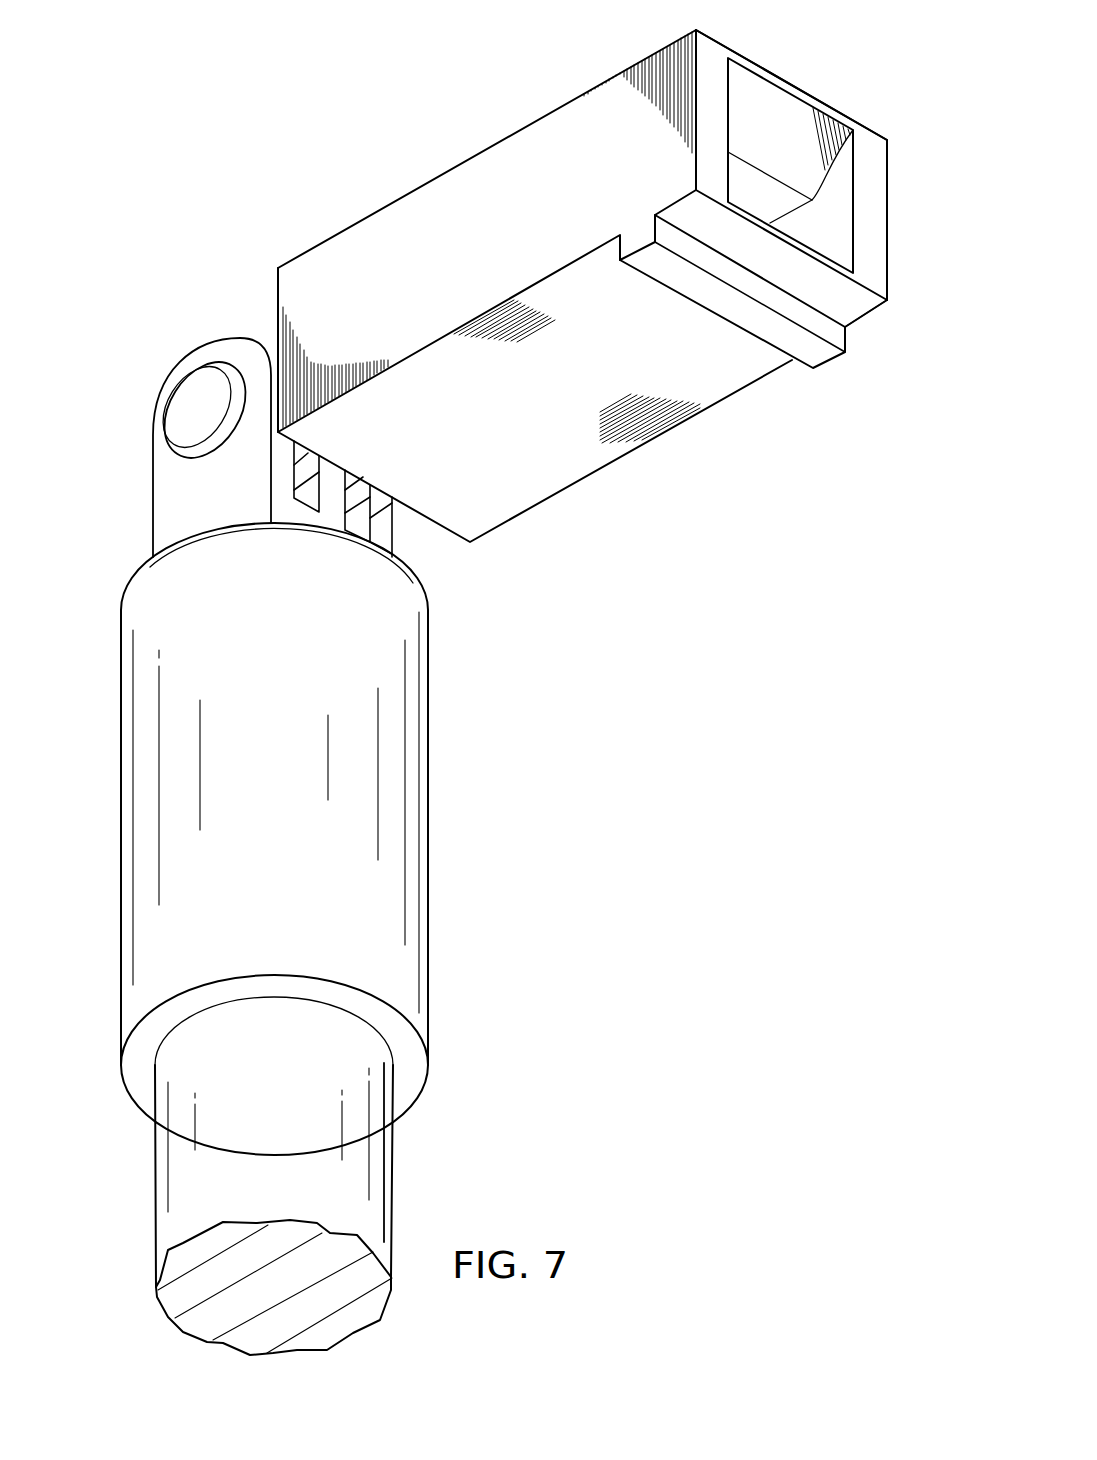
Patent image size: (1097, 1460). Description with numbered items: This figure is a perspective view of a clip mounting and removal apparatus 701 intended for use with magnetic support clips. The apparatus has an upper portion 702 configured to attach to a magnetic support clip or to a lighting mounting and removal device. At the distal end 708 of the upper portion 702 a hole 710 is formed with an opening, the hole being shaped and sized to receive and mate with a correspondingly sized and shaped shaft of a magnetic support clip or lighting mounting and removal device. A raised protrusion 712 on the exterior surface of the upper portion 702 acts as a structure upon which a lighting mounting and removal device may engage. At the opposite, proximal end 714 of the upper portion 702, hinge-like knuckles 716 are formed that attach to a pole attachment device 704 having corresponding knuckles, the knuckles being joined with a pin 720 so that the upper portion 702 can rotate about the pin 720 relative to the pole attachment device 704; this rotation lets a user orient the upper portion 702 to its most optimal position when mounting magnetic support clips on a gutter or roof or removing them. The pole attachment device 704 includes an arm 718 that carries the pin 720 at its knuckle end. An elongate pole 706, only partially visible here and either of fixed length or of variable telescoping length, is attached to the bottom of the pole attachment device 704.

The mounting assembly 701 is at (663, 958).
The upper portion 702 is at (577, 483).
The pole attachment device 704 is at (121, 806).
The elongate pole 706 is at (156, 1190).
The distal end 708 is at (878, 172).
The hole 710 is at (778, 106).
The raised protrusion 712 is at (814, 369).
The proximal end 714 is at (280, 290).
The hinge-like knuckles 716 is at (312, 465).
The mounting arm 718 is at (170, 497).
The pin 720 is at (182, 402).